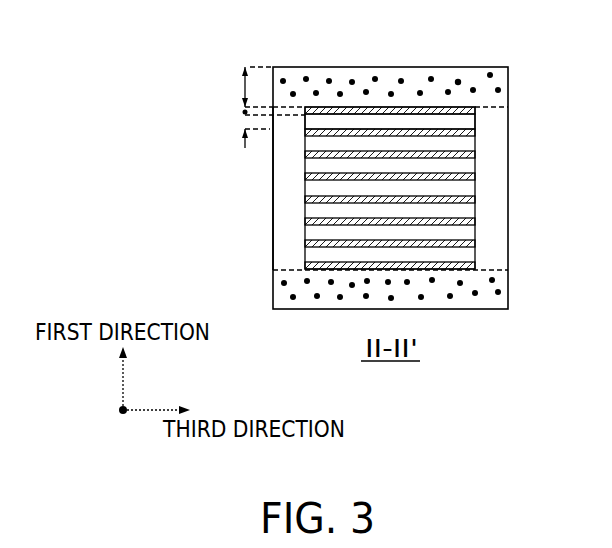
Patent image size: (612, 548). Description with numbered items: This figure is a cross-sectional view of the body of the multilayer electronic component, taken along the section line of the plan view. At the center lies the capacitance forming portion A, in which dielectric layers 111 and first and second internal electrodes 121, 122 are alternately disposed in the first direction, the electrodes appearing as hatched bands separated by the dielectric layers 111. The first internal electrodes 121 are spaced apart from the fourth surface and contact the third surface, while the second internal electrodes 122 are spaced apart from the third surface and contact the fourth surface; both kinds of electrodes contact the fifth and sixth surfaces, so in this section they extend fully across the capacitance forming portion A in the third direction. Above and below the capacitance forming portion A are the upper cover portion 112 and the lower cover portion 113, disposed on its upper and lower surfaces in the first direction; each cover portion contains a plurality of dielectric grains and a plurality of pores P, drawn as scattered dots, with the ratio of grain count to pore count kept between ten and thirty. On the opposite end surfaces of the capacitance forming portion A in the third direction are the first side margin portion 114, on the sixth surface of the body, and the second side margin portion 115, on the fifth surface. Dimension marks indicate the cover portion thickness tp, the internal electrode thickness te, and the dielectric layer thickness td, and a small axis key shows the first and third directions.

The upper cover portion 112 is at (390, 73).
The pore P is at (458, 79).
The first internal electrode 121 is at (476, 110).
The dielectric layer 111 is at (469, 121).
The second internal electrode 122 is at (472, 131).
The second side margin portion 115 is at (500, 185).
The first side margin portion 114 is at (278, 231).
The lower cover portion 113 is at (503, 282).
The capacitance forming portion A is at (297, 192).
The protective layer thickness tp is at (246, 87).
The internal electrode thickness te is at (243, 112).
The dielectric layer thickness td is at (243, 129).